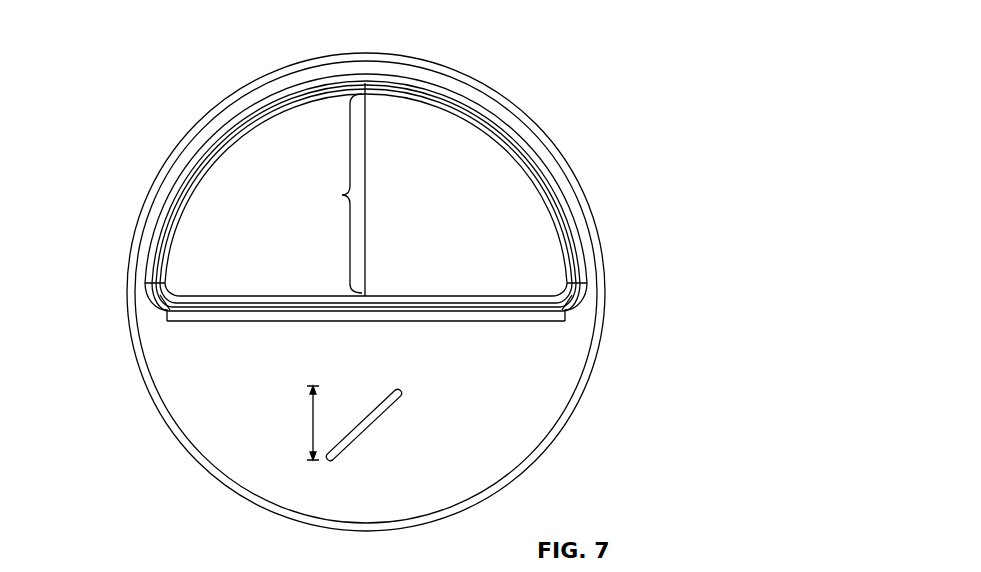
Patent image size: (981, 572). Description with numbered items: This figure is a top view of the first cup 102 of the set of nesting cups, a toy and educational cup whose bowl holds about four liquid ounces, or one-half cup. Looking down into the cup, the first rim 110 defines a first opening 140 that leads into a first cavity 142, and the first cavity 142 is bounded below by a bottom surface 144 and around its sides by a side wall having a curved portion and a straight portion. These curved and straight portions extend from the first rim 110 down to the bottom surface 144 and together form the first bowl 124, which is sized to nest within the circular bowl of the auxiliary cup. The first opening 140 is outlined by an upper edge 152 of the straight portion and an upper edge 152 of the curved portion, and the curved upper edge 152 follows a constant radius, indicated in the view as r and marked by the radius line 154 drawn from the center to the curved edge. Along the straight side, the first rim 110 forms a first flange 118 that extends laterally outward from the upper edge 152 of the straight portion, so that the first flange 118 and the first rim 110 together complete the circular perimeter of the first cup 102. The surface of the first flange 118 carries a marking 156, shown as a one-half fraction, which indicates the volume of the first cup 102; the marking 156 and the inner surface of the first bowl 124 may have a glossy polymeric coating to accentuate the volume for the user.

The first cup 102 is at (611, 54).
The first rim 110 is at (593, 212).
The first flange 118 is at (545, 420).
The first bowl 124 is at (243, 160).
The first opening 140 is at (195, 183).
The first cavity 142 is at (230, 265).
The bottom surface 144 is at (498, 190).
The upper edge 152 is at (345, 297).
The radius line 154 is at (387, 95).
The marking 156 is at (312, 430).